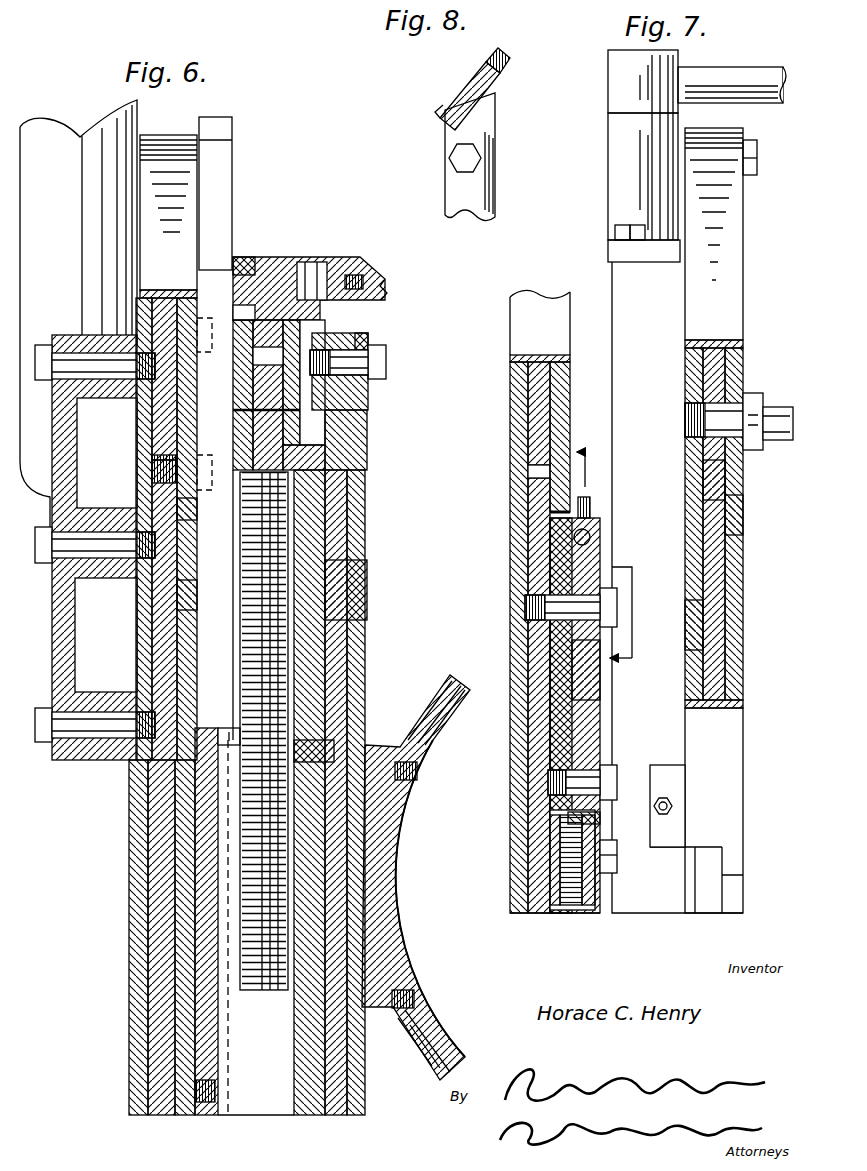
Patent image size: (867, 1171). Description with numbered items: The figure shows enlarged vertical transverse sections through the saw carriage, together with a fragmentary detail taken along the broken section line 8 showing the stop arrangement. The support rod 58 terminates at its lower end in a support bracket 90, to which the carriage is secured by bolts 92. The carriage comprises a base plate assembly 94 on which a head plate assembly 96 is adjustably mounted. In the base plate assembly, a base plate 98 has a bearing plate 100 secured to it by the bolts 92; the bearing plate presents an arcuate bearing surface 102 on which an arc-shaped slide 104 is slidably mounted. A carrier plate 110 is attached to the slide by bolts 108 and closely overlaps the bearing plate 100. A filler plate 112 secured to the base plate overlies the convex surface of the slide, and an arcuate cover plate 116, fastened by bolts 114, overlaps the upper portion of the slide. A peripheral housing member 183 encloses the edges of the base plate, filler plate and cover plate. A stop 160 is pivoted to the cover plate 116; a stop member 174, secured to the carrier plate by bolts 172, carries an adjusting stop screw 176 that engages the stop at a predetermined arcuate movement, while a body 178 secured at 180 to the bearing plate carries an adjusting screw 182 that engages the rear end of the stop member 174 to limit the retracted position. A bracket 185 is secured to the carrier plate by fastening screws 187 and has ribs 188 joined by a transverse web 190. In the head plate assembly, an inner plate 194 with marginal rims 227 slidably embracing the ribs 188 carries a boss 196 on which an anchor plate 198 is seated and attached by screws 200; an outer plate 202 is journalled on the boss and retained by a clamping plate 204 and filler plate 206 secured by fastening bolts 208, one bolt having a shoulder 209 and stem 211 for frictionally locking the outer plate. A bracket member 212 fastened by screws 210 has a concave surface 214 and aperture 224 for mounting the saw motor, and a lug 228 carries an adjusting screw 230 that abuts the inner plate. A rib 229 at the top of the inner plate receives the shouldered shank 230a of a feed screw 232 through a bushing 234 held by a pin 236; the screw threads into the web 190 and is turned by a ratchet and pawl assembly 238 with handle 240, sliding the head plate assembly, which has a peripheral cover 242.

In FIG. 6, the support rod 58 is at (71, 152).
In FIG. 6, the support bracket 90 is at (90, 543).
In FIG. 6, the bolts 92 is at (75, 352).
In FIG. 6, the base plate assembly 94 is at (177, 702).
In FIG. 7, the base plate assembly 94 is at (557, 637).
In FIG. 6, the head plate assembly 96 is at (376, 713).
In FIG. 7, the head plate assembly 96 is at (716, 424).
In FIG. 6, the base plate 98 is at (132, 896).
In FIG. 7, the base plate 98 is at (516, 495).
In FIG. 6, the bearing plate 100 is at (160, 937).
In FIG. 7, the bearing plate 100 is at (540, 758).
In FIG. 6, the arcuate bearing surface 102 is at (190, 510).
In FIG. 6, the slide 104 is at (163, 446).
In FIG. 7, the slide 104 is at (545, 550).
In FIG. 6, the bolts 108 is at (205, 455).
In FIG. 6, the carrier plate 110 is at (186, 590).
In FIG. 7, the carrier plate 110 is at (590, 562).
In FIG. 6, the filler plate 112 is at (147, 318).
In FIG. 7, the filler plate 112 is at (536, 387).
In FIG. 6, the fastening bolts 114 is at (204, 352).
In FIG. 6, the cover plate 116 is at (192, 320).
In FIG. 7, the cover plate 116 is at (563, 407).
In FIG. 6, the stop 160 is at (220, 202).
In FIG. 7, the bolts 172 is at (598, 770).
In FIG. 8, the stop member 174 is at (487, 193).
In FIG. 7, the stop member 174 is at (585, 691).
In FIG. 8, the adjusting stop screw 176 is at (448, 96).
In FIG. 7, the adjusting stop screw 176 is at (590, 505).
In FIG. 7, the body 178 is at (550, 852).
In FIG. 7, the securing means 180 is at (617, 856).
In FIG. 7, the adjusting screw 182 is at (582, 822).
In FIG. 7, the peripheral housing member 183 is at (541, 355).
In FIG. 6, the bracket 185 is at (205, 1037).
In FIG. 6, the fastening screws 187 is at (211, 727).
In FIG. 6, the ribs 188 is at (168, 290).
In FIG. 6, the web 190 is at (318, 760).
In FIG. 6, the inner plate 194 is at (345, 592).
In FIG. 6, the boss 196 is at (366, 745).
In FIG. 6, the anchor plate 198 is at (330, 448).
In FIG. 7, the anchor plate 198 is at (720, 483).
In FIG. 6, the screws 200 is at (340, 502).
In FIG. 6, the outer plate 202 is at (330, 416).
In FIG. 7, the outer plate 202 is at (735, 512).
In FIG. 6, the clamping plate 204 is at (332, 336).
In FIG. 7, the clamping plate 204 is at (690, 628).
In FIG. 6, the filler plate 206 is at (368, 340).
In FIG. 6, the fastening bolts 208 is at (386, 360).
In FIG. 7, the fastening bolts 208 is at (692, 416).
In FIG. 7, the shoulder 209 is at (752, 395).
In FIG. 6, the screws 210 is at (411, 780).
In FIG. 7, the stem 211 is at (779, 407).
In FIG. 6, the bracket member 212 is at (386, 884).
In FIG. 6, the concave surface 214 is at (400, 815).
In FIG. 6, the aperture 224 is at (430, 1032).
In FIG. 7, the marginal rims 227 is at (616, 300).
In FIG. 7, the lug 228 is at (670, 832).
In FIG. 6, the rib 229 is at (290, 458).
In FIG. 7, the adjusting screws 230 is at (672, 803).
In FIG. 6, the shouldered shank 230a is at (345, 392).
In FIG. 6, the feed screw 232 is at (252, 640).
In FIG. 6, the bushing 234 is at (300, 432).
In FIG. 7, the bushing 234 is at (620, 163).
In FIG. 6, the pin 236 is at (246, 410).
In FIG. 6, the ratchet and pawl assembly 238 is at (280, 254).
In FIG. 7, the ratchet and pawl assembly 238 is at (603, 83).
In FIG. 6, the handle 240 is at (384, 270).
In FIG. 7, the handle 240 is at (740, 79).
In FIG. 7, the peripheral cover 242 is at (728, 277).
In FIG. 7, the section line 8 is at (610, 557).